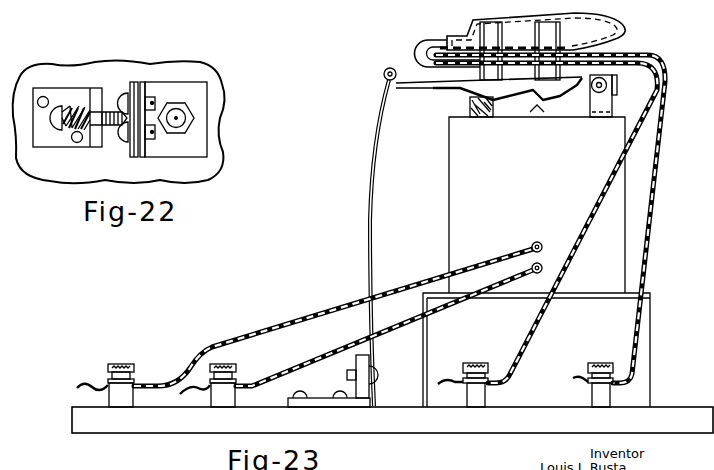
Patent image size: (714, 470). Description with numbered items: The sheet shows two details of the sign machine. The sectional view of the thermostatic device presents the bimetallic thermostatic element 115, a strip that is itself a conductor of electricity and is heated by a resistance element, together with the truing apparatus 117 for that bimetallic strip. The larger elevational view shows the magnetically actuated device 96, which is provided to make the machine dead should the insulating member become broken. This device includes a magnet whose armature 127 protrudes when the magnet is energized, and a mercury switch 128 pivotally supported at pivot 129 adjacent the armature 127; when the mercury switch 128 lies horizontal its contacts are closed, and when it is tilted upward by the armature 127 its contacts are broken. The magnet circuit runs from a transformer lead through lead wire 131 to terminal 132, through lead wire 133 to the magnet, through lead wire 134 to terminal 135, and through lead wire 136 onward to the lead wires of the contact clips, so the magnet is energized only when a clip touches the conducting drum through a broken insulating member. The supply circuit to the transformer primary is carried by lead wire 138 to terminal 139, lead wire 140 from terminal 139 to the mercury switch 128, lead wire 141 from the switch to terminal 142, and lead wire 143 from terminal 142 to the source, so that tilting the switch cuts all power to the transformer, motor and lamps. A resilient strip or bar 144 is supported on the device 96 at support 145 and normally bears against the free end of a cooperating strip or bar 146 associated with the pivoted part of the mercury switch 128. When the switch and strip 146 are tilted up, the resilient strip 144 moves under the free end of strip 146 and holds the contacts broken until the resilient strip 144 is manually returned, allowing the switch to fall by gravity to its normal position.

In FIG. 22, the bimetallic thermostatic element 115 is at (145, 82).
In FIG. 22, the truing apparatus 117 is at (122, 86).
In FIG. 23, the magnetically actuated device 96 is at (458, 178).
In FIG. 23, the armature 127 is at (537, 118).
In FIG. 23, the mercury switch 128 is at (598, 24).
In FIG. 23, the pivot 129 is at (604, 78).
In FIG. 23, the lead wire 131 is at (80, 386).
In FIG. 23, the terminal 132 is at (124, 362).
In FIG. 23, the lead wire 133 is at (226, 342).
In FIG. 23, the lead wire 134 is at (320, 358).
In FIG. 23, the terminal 135 is at (234, 364).
In FIG. 23, the lead wire 136 is at (182, 394).
In FIG. 23, the lead wire 138 is at (446, 380).
In FIG. 23, the terminal 139 is at (472, 364).
In FIG. 23, the lead wire 140 is at (600, 214).
In FIG. 23, the lead wire 141 is at (649, 247).
In FIG. 23, the terminal 142 is at (598, 364).
In FIG. 23, the lead wire 143 is at (574, 380).
In FIG. 23, the resilient strip or bar 144 is at (373, 233).
In FIG. 23, the support 145 is at (370, 400).
In FIG. 23, the cooperating strip or bar 146 is at (410, 88).